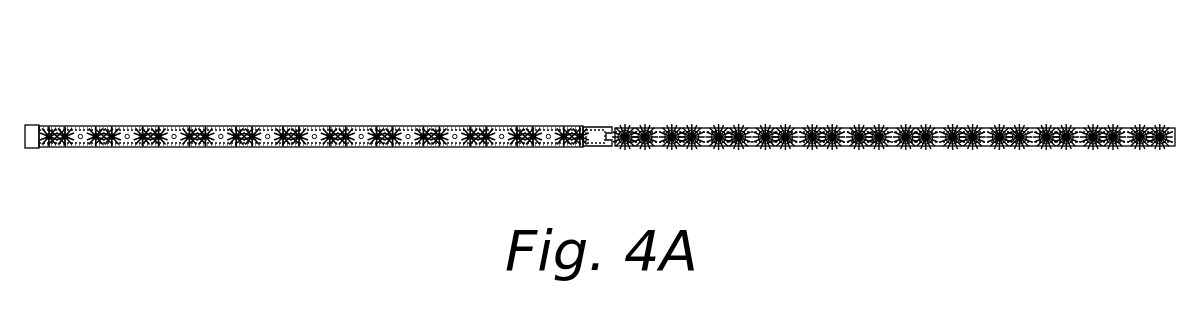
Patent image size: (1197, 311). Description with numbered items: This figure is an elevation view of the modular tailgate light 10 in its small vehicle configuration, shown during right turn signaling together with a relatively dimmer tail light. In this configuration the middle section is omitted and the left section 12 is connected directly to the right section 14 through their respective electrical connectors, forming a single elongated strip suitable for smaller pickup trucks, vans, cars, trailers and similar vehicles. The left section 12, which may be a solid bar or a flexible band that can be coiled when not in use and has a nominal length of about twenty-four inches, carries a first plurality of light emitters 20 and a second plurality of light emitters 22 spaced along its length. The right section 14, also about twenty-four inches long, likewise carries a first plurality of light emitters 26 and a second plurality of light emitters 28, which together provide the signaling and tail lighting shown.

The modular tailgate light 10 is at (353, 43).
The left section 12 is at (190, 96).
The right section 14 is at (994, 88).
The first plurality of light emitters 20 is at (267, 199).
The second plurality of light emitters 22 is at (426, 199).
The first plurality of light emitters 26 is at (939, 199).
The second plurality of light emitters 28 is at (1126, 201).